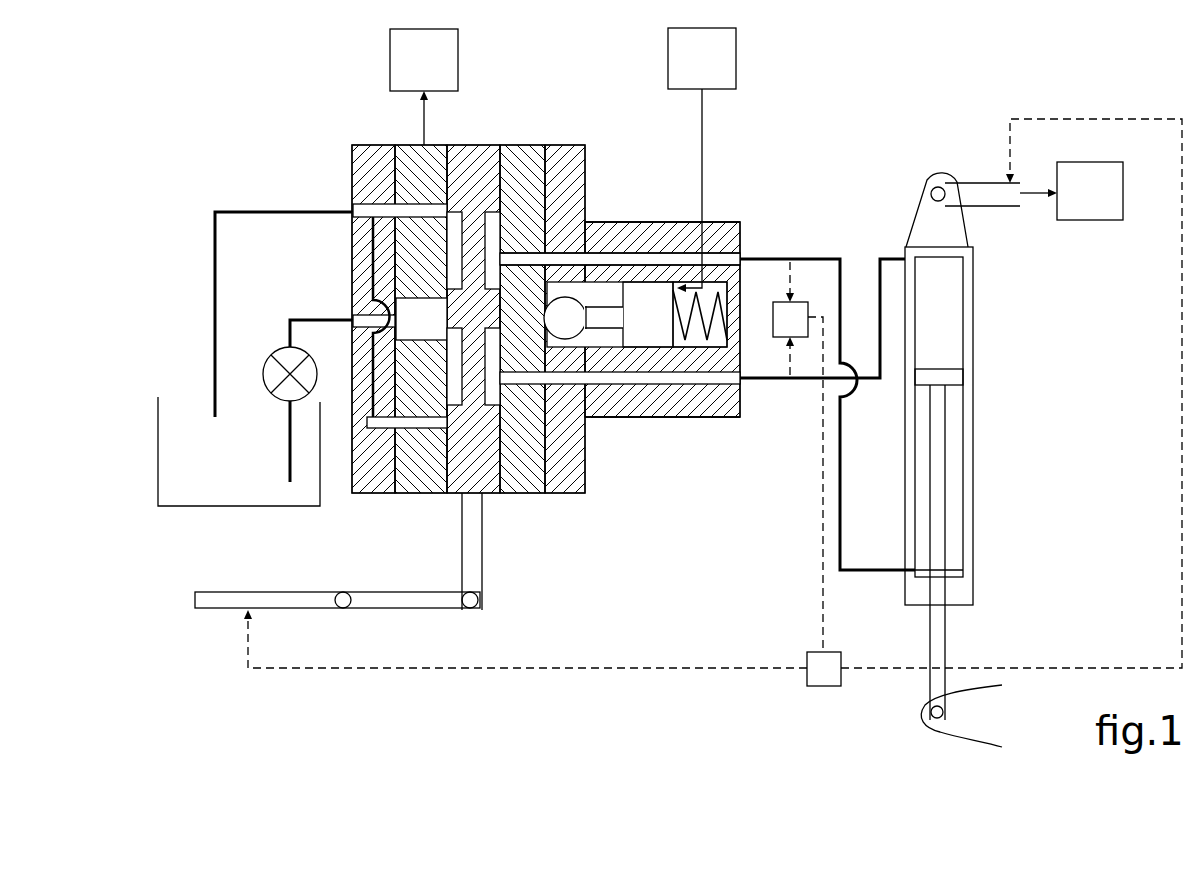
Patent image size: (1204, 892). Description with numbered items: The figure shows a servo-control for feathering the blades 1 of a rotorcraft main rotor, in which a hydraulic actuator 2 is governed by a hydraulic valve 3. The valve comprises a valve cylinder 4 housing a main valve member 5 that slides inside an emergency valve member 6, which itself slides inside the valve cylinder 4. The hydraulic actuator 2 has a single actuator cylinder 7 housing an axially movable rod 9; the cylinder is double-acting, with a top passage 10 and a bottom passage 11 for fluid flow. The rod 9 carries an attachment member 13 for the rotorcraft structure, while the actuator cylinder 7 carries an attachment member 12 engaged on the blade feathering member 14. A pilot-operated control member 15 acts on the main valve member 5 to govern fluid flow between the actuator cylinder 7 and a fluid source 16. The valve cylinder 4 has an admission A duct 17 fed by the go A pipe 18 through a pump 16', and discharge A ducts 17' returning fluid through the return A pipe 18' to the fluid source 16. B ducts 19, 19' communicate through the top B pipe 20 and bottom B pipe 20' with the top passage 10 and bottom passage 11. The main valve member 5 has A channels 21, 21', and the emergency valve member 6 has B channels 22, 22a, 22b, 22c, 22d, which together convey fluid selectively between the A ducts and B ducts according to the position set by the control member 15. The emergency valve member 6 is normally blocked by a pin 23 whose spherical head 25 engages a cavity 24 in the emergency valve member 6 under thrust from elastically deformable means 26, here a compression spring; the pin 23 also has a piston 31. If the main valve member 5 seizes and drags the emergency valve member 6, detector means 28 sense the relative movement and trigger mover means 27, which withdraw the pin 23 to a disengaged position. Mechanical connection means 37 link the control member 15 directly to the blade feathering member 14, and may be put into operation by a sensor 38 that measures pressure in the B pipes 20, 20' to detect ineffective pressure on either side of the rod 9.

The blades 1 is at (1090, 191).
The hydraulic actuator 2 is at (1010, 410).
The hydraulic valve 3 is at (318, 152).
The valve cylinder 4 is at (640, 222).
The main valve member 5 is at (485, 145).
The emergency valve member 6 is at (535, 145).
The actuator cylinder 7 is at (975, 472).
The rod 9 is at (947, 640).
The top passage 10 is at (913, 260).
The bottom passage 11 is at (915, 568).
The attachment member 12 is at (965, 222).
The attachment member 13 is at (961, 716).
The blade feathering member 14 is at (978, 183).
The control member 15 is at (305, 592).
The fluid source 16 is at (239, 451).
The pump 16' is at (277, 397).
The admission A duct 17 is at (355, 295).
The discharge A ducts 17' is at (375, 325).
The go A pipe 18 is at (308, 305).
The return A pipe 18' is at (283, 289).
The B duct 19 is at (662, 425).
The B duct 19' is at (665, 209).
The top B pipe 20 is at (822, 350).
The bottom B pipe 20' is at (827, 388).
The A channel 21 is at (469, 303).
The A channel 21' is at (484, 373).
The B channel 22 is at (410, 317).
The B channel 22a is at (417, 200).
The B channel 22b is at (430, 432).
The B channel 22c is at (525, 252).
The B channel 22d is at (527, 385).
The pin 23 is at (603, 332).
The cavity 24 is at (550, 282).
The head 25 is at (583, 318).
The elastically deformable means 26 is at (727, 312).
The mover means 27 is at (702, 160).
The detector means 28 is at (424, 60).
The piston 31 is at (637, 314).
The mechanical connection means 37 is at (713, 402).
The sensor 38 is at (798, 457).